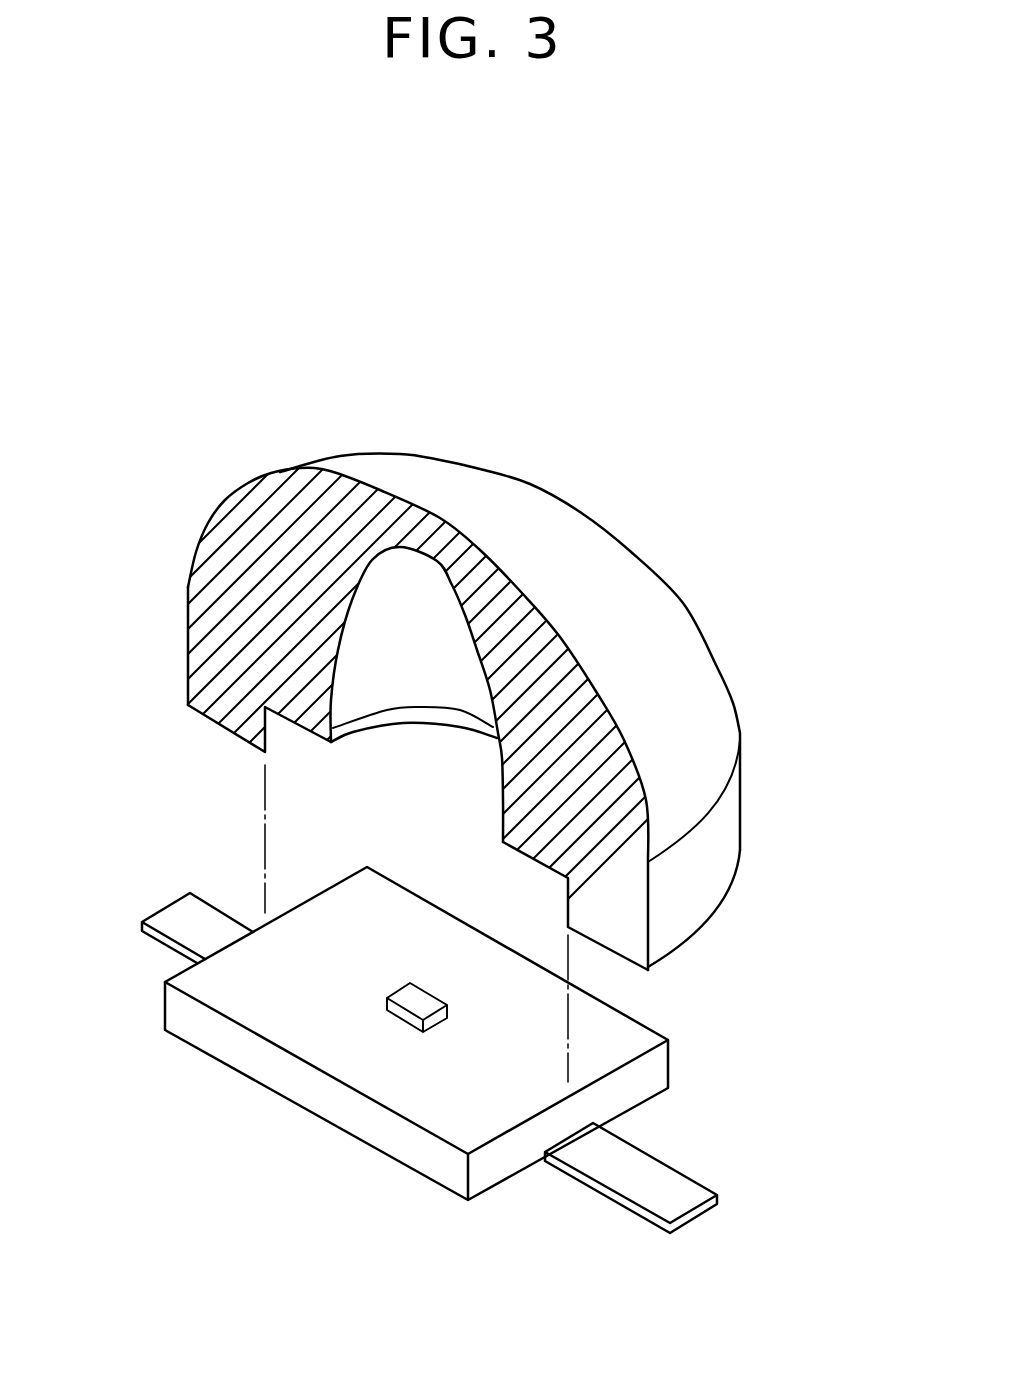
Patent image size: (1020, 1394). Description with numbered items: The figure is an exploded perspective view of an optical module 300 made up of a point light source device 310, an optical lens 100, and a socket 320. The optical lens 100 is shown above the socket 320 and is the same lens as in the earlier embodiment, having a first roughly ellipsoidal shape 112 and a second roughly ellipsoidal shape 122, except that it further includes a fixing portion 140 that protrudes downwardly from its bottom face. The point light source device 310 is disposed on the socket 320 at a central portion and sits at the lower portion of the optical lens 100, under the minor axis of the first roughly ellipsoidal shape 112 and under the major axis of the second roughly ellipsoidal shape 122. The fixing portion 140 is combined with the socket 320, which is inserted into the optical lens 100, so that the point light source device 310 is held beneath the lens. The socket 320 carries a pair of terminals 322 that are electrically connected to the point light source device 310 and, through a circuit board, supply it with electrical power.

The optical module 300 is at (491, 408).
The optical lens 100 is at (689, 594).
The second roughly ellipsoidal shape 122 is at (557, 533).
The first roughly ellipsoidal shape 112 is at (390, 677).
The fixing portion 140 is at (228, 726).
The socket 320 is at (248, 997).
The terminals 322 is at (610, 1168).
The point light source device 310 is at (420, 1002).